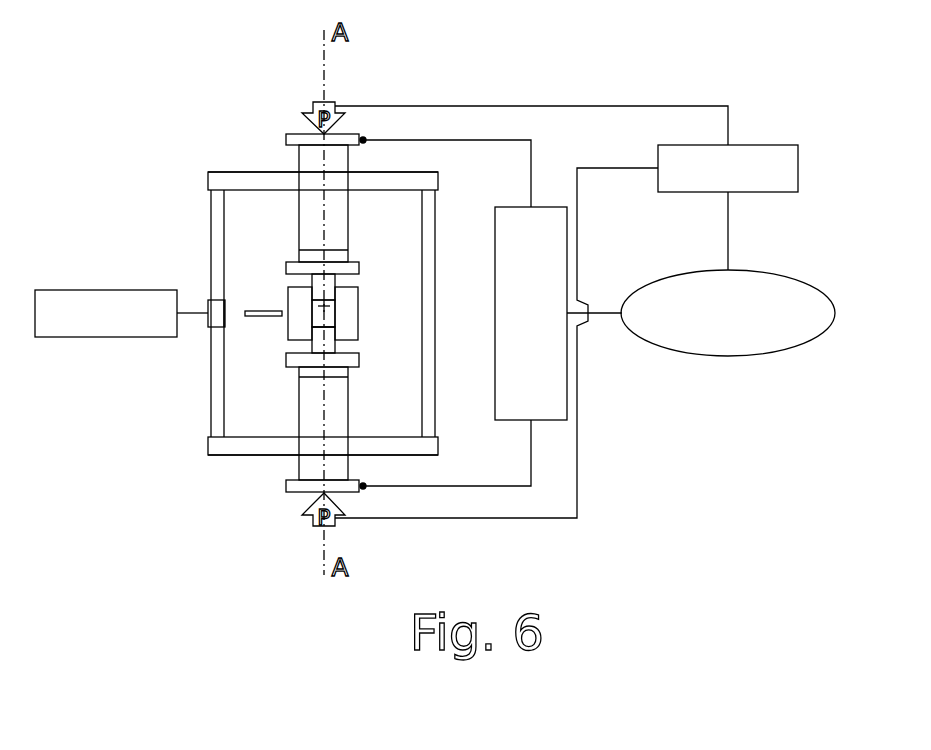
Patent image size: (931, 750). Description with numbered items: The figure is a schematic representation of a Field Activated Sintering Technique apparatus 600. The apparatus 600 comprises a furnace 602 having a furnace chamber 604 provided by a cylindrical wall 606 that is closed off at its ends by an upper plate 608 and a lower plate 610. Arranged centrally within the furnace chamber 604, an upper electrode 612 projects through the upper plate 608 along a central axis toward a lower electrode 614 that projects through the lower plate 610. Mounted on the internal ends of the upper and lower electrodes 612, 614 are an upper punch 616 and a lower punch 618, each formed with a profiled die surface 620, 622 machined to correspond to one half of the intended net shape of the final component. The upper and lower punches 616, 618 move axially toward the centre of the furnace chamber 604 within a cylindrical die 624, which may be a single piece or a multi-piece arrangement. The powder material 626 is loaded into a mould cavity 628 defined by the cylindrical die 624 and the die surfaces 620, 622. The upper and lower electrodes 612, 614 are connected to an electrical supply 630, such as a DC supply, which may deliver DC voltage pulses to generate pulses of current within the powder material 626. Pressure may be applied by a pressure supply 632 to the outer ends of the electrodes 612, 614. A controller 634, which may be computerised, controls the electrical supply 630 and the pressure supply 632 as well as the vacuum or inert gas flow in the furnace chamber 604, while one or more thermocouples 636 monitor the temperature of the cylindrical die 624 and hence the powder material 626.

The apparatus 600 is at (208, 80).
The furnace 602 is at (197, 227).
The furnace chamber 604 is at (247, 350).
The cylindrical wall 606 is at (217, 407).
The upper plate 608 is at (393, 171).
The lower plate 610 is at (397, 455).
The upper electrode 612 is at (299, 157).
The lower electrode 614 is at (299, 471).
The upper punch 616 is at (340, 282).
The lower punch 618 is at (340, 348).
The upper profiled die surface 620 is at (317, 312).
The lower profiled die surface 622 is at (315, 333).
The cylindrical die 624 is at (368, 313).
The powder material 626 is at (323, 310).
The mould cavity 628 is at (323, 310).
The electrical supply 630 is at (531, 313).
The pressure supply 632 is at (728, 168).
The controller 634 is at (728, 313).
The thermocouple 636 is at (158, 313).